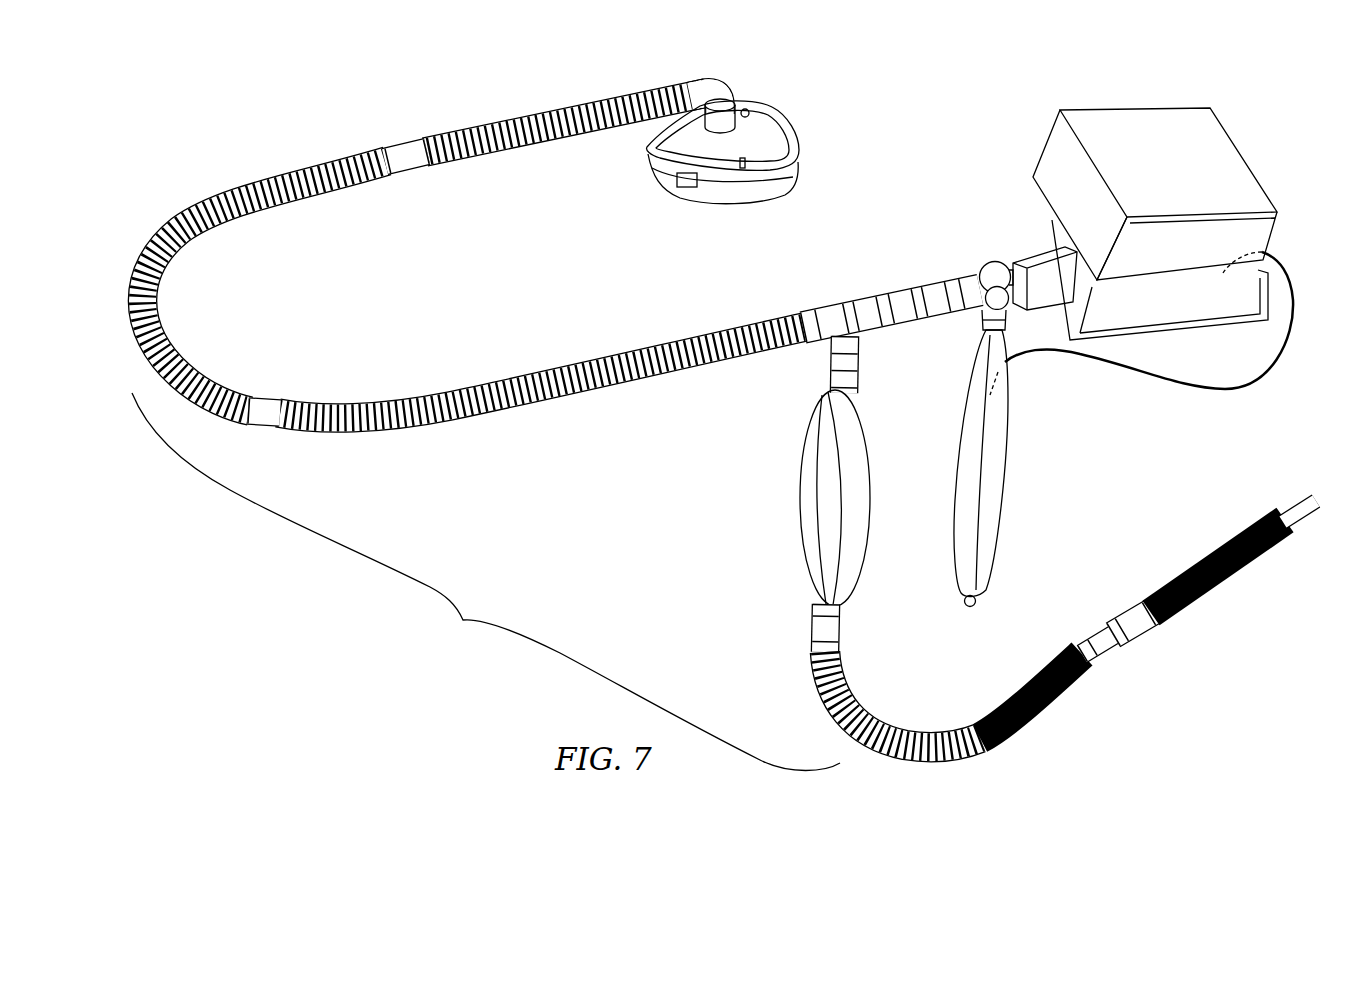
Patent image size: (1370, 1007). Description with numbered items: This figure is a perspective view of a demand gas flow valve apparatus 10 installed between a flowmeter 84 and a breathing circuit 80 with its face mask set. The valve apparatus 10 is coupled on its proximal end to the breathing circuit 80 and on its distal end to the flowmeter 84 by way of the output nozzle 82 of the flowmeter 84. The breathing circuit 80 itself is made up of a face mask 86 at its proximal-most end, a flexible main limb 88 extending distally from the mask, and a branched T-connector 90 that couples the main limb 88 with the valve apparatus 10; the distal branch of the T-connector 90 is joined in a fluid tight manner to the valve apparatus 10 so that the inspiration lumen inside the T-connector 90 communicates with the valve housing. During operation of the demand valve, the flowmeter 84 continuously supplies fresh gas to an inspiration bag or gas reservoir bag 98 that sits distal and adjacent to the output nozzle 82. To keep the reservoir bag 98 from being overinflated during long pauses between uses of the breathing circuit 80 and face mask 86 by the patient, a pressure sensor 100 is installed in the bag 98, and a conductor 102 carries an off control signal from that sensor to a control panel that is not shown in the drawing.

The gas flow valve apparatus 10 is at (907, 292).
The breathing circuit 80 is at (486, 582).
The output nozzle 82 is at (978, 272).
The flowmeter 84 is at (1150, 127).
The face mask 86 is at (765, 142).
The flexible main limb 88 is at (264, 201).
The T-connector 90 is at (843, 317).
The reservoir bag 98 is at (992, 478).
The pressure sensor 100 is at (1000, 373).
The conductor 102 is at (1213, 393).